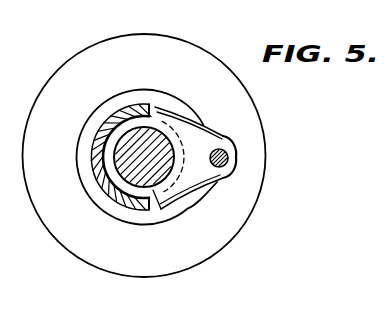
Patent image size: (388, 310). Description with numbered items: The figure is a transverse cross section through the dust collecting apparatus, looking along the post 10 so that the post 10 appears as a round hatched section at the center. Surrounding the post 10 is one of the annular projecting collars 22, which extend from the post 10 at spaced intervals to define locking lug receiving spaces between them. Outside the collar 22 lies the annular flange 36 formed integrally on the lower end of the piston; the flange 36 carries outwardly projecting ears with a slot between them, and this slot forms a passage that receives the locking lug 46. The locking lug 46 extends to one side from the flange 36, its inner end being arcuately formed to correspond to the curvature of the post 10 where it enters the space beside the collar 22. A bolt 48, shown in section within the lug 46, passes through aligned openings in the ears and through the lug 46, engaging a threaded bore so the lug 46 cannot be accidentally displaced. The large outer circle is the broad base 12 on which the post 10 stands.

The post 10 is at (133, 188).
The base 12 is at (202, 56).
The collar 22 is at (115, 175).
The annular flange 36 is at (132, 110).
The locking lug 46 is at (203, 133).
The bolt 48 is at (231, 163).